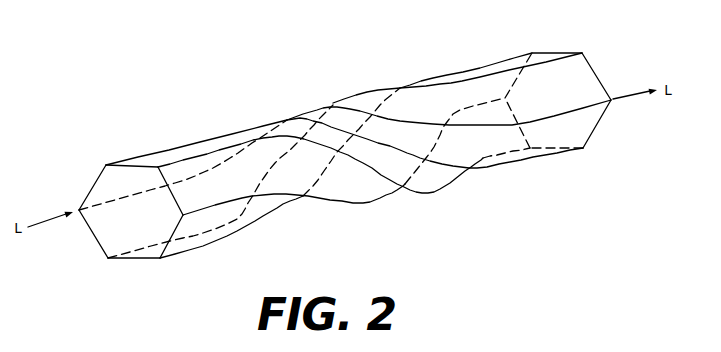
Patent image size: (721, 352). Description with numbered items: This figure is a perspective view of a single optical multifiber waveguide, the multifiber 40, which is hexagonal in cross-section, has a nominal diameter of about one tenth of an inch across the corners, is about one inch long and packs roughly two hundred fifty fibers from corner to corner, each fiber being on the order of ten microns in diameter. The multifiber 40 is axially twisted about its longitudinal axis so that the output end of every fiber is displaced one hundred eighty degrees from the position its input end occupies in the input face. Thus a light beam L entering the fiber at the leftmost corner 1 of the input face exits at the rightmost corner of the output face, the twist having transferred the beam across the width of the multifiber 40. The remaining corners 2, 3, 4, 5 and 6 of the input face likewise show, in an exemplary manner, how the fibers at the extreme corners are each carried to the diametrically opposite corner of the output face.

The multifiber 40 is at (345, 155).
The leftmost corner of the input face 1 is at (346, 147).
The corner of the input face 2 is at (348, 153).
The corner of the input face 3 is at (347, 156).
The corner of the input face 4 is at (346, 155).
The corner of the input face 5 is at (345, 155).
The corner of the input face 6 is at (345, 156).